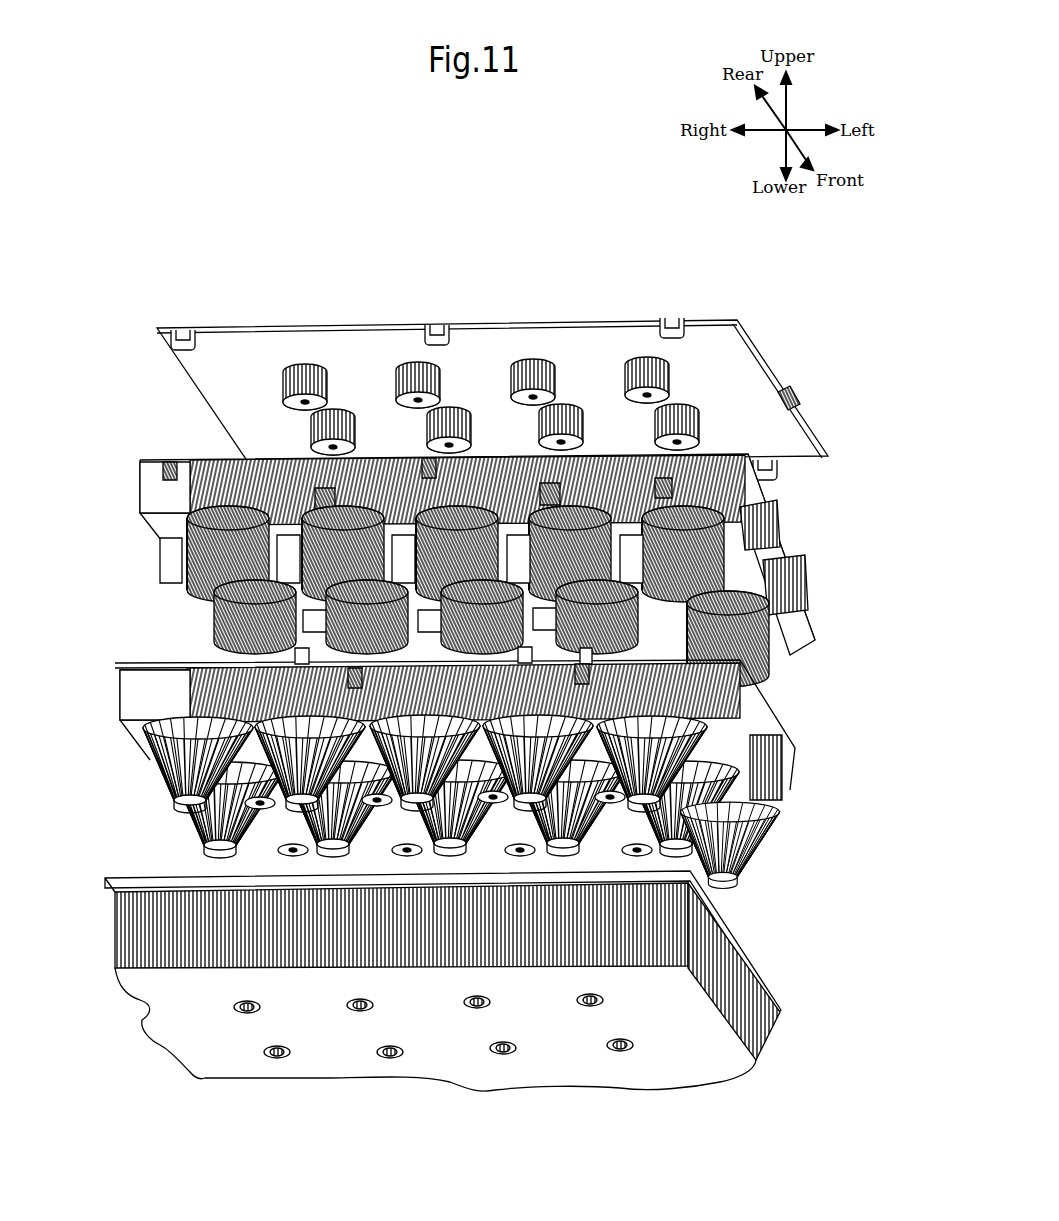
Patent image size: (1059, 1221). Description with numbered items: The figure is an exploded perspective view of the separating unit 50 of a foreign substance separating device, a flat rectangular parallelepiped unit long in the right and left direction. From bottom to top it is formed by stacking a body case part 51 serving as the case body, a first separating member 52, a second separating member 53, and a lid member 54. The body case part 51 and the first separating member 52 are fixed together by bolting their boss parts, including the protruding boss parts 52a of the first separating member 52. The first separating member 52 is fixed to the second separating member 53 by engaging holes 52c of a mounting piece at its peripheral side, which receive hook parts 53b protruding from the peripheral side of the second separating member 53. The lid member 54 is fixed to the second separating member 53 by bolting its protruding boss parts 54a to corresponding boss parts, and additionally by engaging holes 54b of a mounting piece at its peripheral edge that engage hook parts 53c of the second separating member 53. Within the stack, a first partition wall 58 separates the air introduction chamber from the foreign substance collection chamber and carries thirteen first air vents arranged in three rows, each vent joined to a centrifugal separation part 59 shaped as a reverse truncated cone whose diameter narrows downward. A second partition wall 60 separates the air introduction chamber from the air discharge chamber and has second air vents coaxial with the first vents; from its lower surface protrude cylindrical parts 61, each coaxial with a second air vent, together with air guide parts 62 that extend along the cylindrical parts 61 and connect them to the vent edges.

The separating unit 50 is at (195, 289).
The body case part 51 is at (712, 965).
The first separating member 52 is at (461, 903).
The protruding boss parts 52a is at (645, 846).
The engaging holes 52c is at (525, 650).
The second separating member 53 is at (471, 474).
The hook parts 53b is at (548, 495).
The hook parts 53c is at (663, 484).
The lid member 54 is at (497, 343).
The protruding boss parts 54a is at (640, 368).
The engaging holes 54b is at (672, 325).
The first partition wall 58 is at (140, 732).
The centrifugal separation part 59 is at (410, 848).
The second partition wall 60 is at (165, 523).
The cylindrical part 61 is at (193, 617).
The air guide part 62 is at (427, 538).